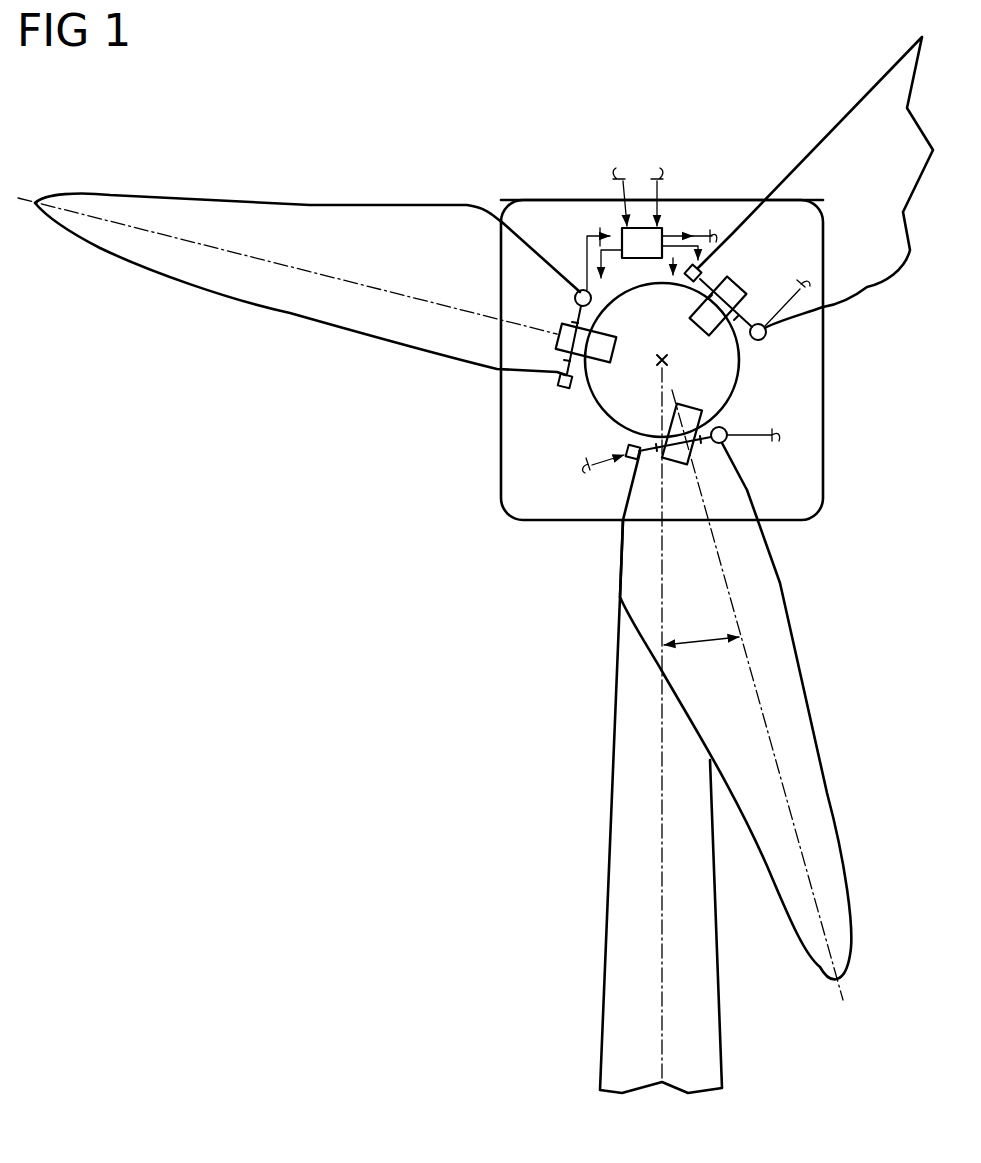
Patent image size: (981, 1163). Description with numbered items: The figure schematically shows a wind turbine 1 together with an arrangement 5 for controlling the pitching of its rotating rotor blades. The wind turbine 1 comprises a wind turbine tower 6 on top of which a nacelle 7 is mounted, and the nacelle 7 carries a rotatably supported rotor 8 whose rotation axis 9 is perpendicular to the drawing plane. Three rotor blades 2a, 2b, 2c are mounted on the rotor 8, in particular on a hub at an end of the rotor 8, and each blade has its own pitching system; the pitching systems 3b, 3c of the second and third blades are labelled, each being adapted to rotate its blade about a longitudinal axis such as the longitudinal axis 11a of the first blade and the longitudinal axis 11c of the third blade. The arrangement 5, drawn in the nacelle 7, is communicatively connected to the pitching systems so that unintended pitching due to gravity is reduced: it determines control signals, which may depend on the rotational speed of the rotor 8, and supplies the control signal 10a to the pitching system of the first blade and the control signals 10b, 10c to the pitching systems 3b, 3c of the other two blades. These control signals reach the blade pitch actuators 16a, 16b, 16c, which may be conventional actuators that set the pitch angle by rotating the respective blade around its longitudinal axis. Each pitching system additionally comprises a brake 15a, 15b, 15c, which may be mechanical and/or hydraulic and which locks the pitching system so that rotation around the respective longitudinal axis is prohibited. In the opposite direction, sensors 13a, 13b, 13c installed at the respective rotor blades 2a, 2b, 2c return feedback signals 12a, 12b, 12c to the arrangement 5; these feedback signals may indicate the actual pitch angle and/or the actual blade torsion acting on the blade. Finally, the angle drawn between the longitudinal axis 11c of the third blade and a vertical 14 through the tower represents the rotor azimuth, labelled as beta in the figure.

The wind turbine 1 is at (479, 118).
The rotor blade 2a is at (285, 204).
The rotor blade 2b is at (846, 115).
The rotor blade 2c is at (789, 668).
The pitching system 3b is at (772, 344).
The pitching system 3c is at (742, 446).
The arrangement 5 is at (642, 227).
The wind turbine tower 6 is at (608, 902).
The nacelle 7 is at (501, 468).
The rotor 8 is at (739, 369).
The rotation axis 9 is at (657, 364).
The control signal 10a is at (586, 268).
The control signal 10b is at (710, 262).
The control signal 10c is at (680, 228).
The longitudinal axis 11a is at (352, 276).
The longitudinal axis 11c is at (824, 922).
The feedback signal 12a is at (600, 226).
The feedback signal 12b is at (620, 176).
The feedback signal 12c is at (662, 176).
The sensor 13a is at (575, 298).
The sensor 13b is at (768, 332).
The sensor 13c is at (728, 444).
The vertical 14 is at (661, 823).
The brake 15a is at (560, 337).
The brake 15b is at (705, 330).
The brake 15c is at (683, 466).
The blade pitch actuator 16a is at (560, 388).
The blade pitch actuator 16b is at (710, 280).
The blade pitch actuator 16c is at (628, 454).